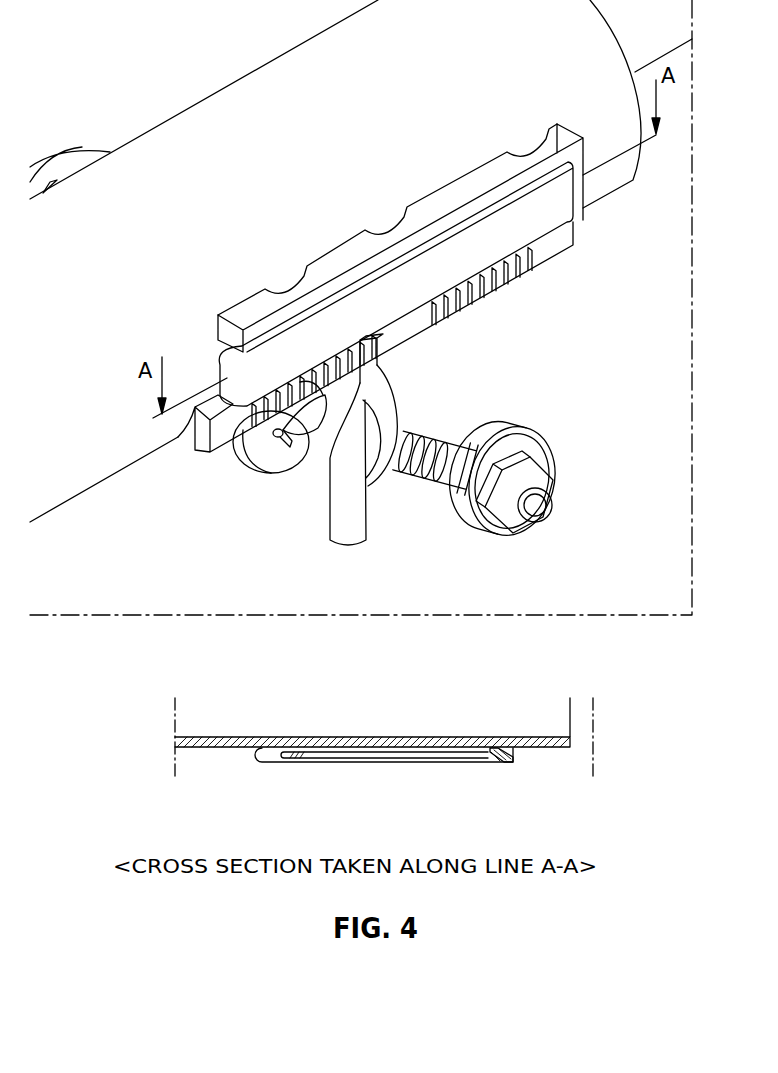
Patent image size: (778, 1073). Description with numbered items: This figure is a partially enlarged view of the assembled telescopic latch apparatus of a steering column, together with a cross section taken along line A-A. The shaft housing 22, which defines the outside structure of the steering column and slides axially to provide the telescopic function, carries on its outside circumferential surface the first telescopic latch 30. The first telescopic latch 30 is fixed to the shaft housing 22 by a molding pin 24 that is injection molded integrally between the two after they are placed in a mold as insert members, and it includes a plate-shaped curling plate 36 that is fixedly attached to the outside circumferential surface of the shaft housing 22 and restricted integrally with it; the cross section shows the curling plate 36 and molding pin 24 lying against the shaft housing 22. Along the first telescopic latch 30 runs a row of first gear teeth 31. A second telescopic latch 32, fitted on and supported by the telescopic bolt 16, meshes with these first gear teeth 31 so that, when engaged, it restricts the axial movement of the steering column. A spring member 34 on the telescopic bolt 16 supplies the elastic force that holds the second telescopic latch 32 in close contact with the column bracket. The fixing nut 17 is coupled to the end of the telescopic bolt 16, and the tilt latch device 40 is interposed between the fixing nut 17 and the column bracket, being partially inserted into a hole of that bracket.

The telescopic bolt 16 is at (557, 503).
The fixing nut 17 is at (498, 530).
The shaft housing 22 is at (213, 113).
The molding pin 24 is at (493, 740).
The first telescopic latch 30 is at (585, 183).
The first gear teeth 31 is at (500, 277).
The second telescopic latch 32 is at (347, 440).
The spring member 34 is at (307, 424).
The curling plate 36 is at (557, 213).
The tilt latch device 40 is at (386, 540).